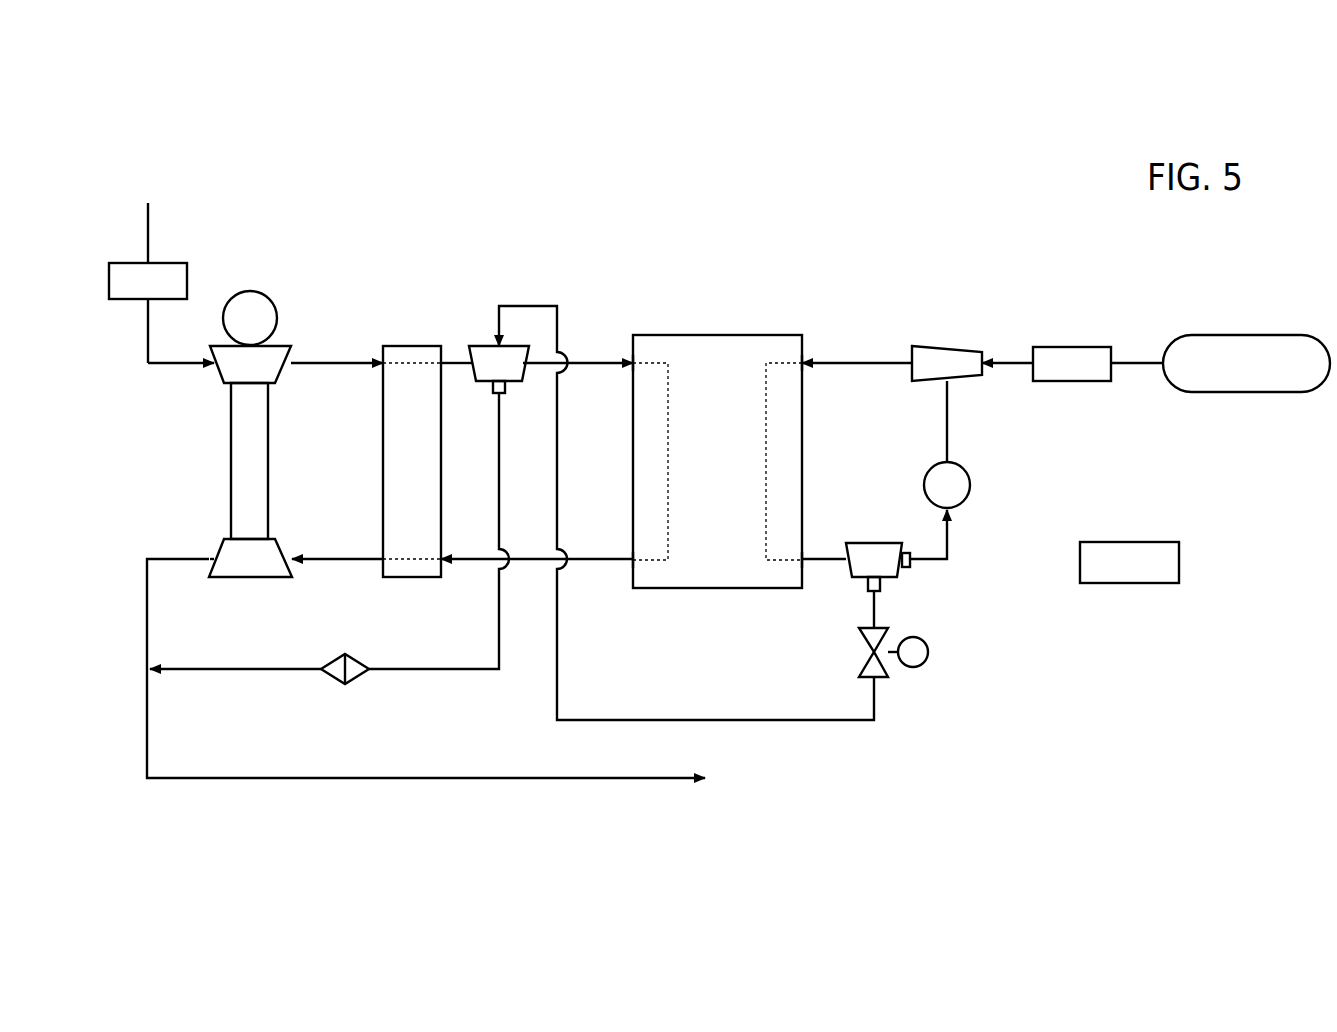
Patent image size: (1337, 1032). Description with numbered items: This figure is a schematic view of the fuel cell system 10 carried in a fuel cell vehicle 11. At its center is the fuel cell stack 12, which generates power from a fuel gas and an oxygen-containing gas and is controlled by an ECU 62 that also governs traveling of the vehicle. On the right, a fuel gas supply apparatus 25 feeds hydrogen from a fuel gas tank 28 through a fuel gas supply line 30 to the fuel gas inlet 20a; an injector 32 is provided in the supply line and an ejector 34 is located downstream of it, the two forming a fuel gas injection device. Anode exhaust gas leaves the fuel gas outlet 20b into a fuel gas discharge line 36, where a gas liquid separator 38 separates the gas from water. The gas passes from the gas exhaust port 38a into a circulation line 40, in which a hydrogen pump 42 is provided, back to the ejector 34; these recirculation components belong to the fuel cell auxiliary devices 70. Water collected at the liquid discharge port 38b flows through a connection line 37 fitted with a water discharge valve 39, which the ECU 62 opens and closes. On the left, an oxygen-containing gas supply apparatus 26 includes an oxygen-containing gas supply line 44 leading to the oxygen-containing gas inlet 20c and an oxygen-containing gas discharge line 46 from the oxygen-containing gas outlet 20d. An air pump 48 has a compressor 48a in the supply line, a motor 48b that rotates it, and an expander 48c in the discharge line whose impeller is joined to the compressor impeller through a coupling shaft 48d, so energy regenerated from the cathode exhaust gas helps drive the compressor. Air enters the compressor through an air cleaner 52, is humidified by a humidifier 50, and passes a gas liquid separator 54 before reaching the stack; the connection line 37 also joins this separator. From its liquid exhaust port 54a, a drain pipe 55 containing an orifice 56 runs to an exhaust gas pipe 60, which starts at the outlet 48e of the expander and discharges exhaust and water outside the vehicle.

The fuel cell system 10 is at (620, 268).
The fuel cell vehicle 11 is at (1024, 230).
The fuel cell stack 12 is at (758, 334).
The fuel gas inlet 20a is at (803, 359).
The fuel gas outlet 20b is at (803, 562).
The oxygen-containing gas inlet 20c is at (632, 359).
The oxygen-containing gas outlet 20d is at (632, 562).
The fuel gas supply apparatus 25 is at (1038, 321).
The oxygen-containing gas supply apparatus 26 is at (353, 341).
The fuel gas tank 28 is at (1245, 343).
The fuel gas supply line 30 is at (1138, 360).
The injector 32 is at (1070, 370).
The ejector 34 is at (953, 356).
The fuel gas discharge line 36 is at (826, 555).
The connection line 37 is at (762, 718).
The gas liquid separator 38 is at (921, 561).
The gas exhaust port 38a is at (913, 562).
The liquid discharge port 38b is at (880, 583).
The water discharge valve 39 is at (867, 667).
The circulation line 40 is at (945, 433).
The hydrogen pump 42 is at (953, 481).
The oxygen-containing gas supply line 44 is at (341, 366).
The oxygen-containing gas discharge line 46 is at (305, 556).
The air pump 48 is at (243, 433).
The compressor 48a is at (278, 351).
The motor 48b is at (255, 297).
The expander 48c is at (233, 552).
The coupling shaft 48d is at (245, 447).
The outlet 48e is at (212, 560).
The humidifier 50 is at (413, 352).
The air cleaner 52 is at (168, 268).
The gas liquid separator 54 is at (491, 373).
The liquid exhaust port 54a is at (492, 387).
The drain pipe 55 is at (273, 664).
The orifice 56 is at (357, 662).
The exhaust gas pipe 60 is at (505, 776).
The ECU 62 is at (1152, 540).
The fuel cell auxiliary devices 70 is at (1013, 438).